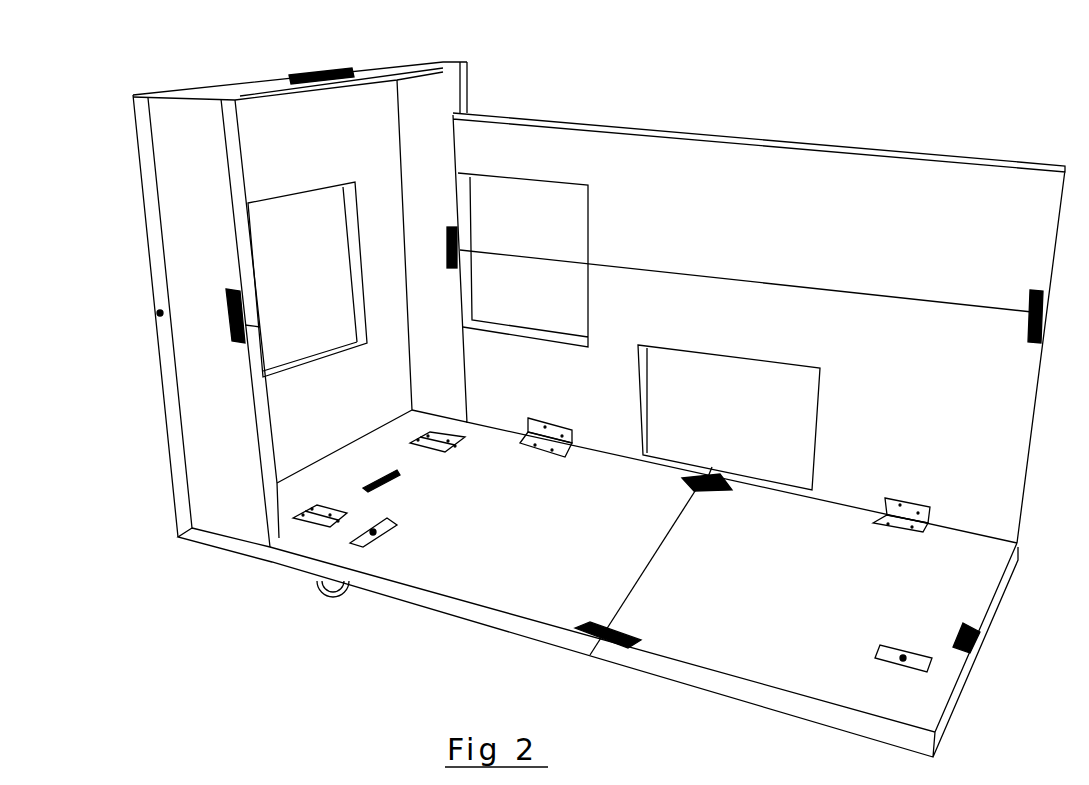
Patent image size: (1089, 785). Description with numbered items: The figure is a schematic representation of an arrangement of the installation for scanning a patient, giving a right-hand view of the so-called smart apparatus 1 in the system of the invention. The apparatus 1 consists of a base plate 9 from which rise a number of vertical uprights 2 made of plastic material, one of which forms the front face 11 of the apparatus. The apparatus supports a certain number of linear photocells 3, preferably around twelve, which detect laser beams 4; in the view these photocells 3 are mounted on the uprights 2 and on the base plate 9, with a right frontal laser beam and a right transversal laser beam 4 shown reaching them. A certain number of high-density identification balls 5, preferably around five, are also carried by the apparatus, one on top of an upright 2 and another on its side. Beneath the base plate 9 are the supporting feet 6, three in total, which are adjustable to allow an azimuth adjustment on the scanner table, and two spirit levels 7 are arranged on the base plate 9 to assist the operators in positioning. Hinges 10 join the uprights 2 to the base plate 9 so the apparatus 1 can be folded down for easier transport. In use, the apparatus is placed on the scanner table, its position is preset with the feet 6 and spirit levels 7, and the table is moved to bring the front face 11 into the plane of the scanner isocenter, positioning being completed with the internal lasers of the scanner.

The apparatus 1 is at (692, 37).
The vertical uprights 2 is at (991, 233).
The linear photocells 3 is at (984, 655).
The laser beams 4 is at (803, 290).
The high-density identification balls 5 is at (292, 77).
The supporting feet 6 is at (331, 590).
The spirit levels 7 is at (376, 534).
The base plate 9 is at (790, 675).
The hinges 10 is at (445, 452).
The front face 11 is at (148, 153).